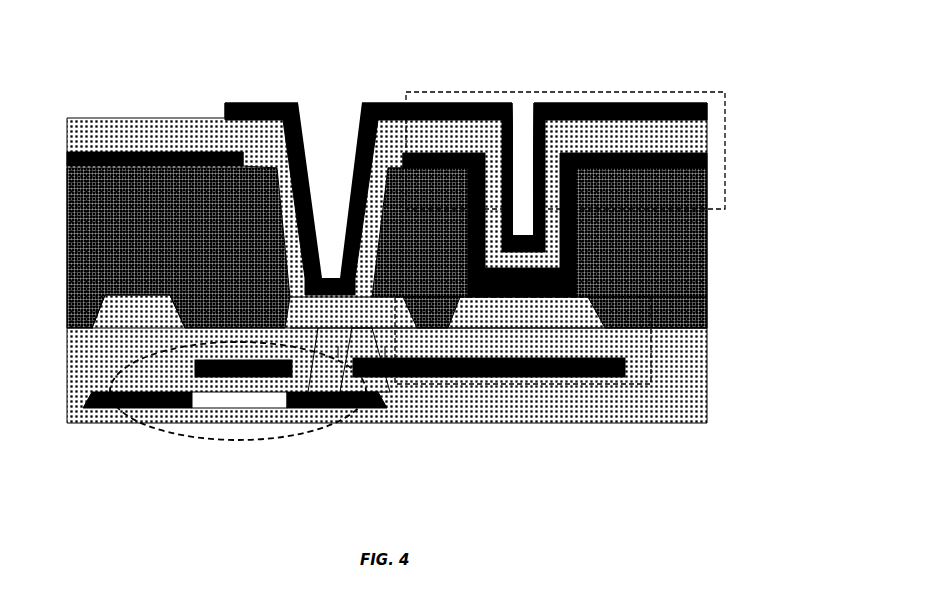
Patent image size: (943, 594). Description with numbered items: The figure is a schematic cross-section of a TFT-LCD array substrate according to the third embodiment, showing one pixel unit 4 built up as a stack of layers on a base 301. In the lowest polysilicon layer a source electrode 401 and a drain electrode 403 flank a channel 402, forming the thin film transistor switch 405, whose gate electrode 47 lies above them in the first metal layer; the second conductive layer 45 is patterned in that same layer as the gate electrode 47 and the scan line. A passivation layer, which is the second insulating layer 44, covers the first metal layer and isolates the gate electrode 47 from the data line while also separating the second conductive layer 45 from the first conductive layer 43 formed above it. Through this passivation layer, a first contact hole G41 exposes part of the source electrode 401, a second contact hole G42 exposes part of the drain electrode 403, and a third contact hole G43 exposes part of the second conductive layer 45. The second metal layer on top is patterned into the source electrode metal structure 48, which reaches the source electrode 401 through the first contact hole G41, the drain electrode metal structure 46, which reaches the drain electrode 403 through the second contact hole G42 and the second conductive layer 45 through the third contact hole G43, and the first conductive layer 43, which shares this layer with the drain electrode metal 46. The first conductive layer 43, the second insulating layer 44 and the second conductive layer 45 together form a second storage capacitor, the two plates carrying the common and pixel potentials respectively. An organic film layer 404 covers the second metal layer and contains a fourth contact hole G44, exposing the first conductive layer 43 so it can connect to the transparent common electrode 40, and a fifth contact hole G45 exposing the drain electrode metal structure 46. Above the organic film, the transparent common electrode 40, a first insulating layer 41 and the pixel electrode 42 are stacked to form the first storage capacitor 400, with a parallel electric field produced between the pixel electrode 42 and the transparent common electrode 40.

The pixel unit 4 is at (363, 242).
The transparent common electrode 40 is at (707, 157).
The first insulating layer 41 is at (698, 137).
The pixel electrode 42 is at (707, 105).
The first conductive layer 43 is at (585, 313).
The second insulating layer 44 is at (587, 348).
The second conductive layer 45 is at (627, 362).
The drain electrode metal structure 46 is at (323, 395).
The gate electrode 47 is at (232, 378).
The source electrode metal structure 48 is at (130, 350).
The base substrate 301 is at (428, 392).
The first storage capacitor 400 is at (584, 89).
The source electrode 401 is at (93, 396).
The channel 402 is at (213, 400).
The drain electrode 403 is at (300, 405).
The organic film layer 404 is at (657, 232).
The thin film transistor switch 405 is at (108, 368).
The first contact hole G41 is at (130, 347).
The second contact hole G42 is at (337, 346).
The third contact hole G43 is at (386, 346).
The fourth contact hole G44 is at (523, 127).
The fifth contact hole G45 is at (323, 160).